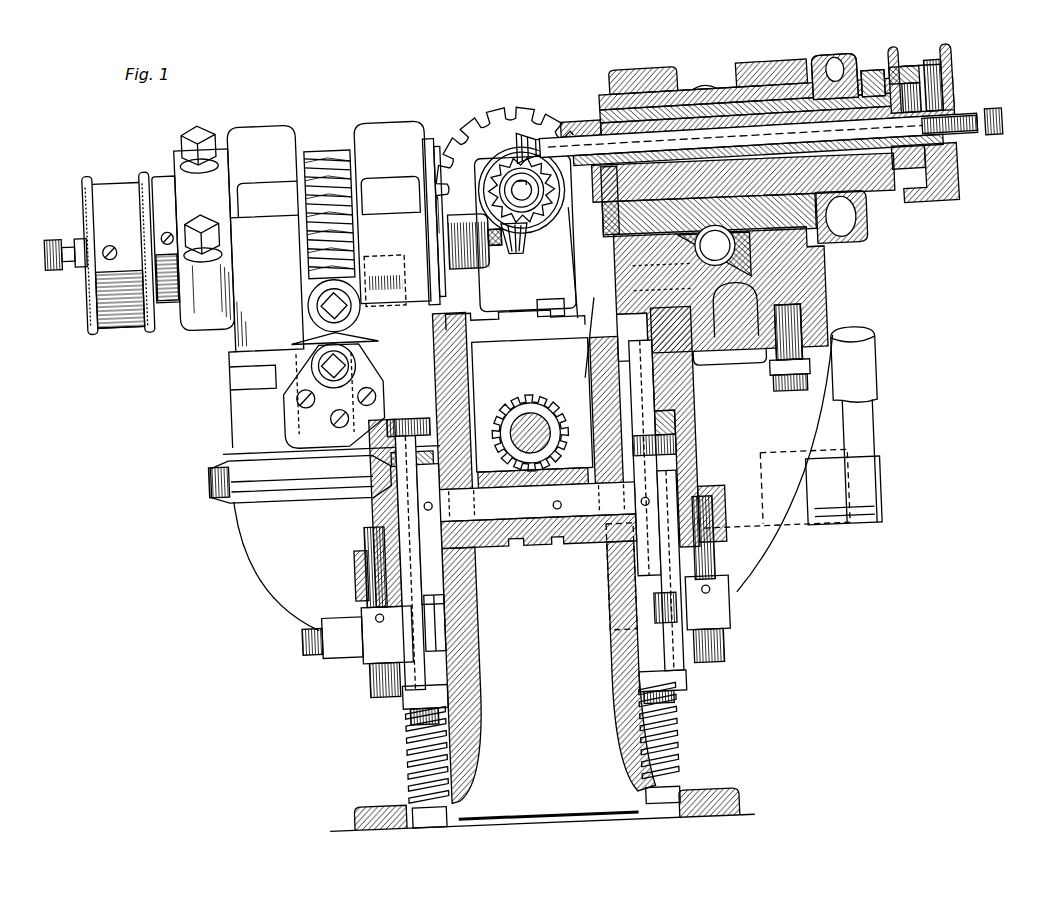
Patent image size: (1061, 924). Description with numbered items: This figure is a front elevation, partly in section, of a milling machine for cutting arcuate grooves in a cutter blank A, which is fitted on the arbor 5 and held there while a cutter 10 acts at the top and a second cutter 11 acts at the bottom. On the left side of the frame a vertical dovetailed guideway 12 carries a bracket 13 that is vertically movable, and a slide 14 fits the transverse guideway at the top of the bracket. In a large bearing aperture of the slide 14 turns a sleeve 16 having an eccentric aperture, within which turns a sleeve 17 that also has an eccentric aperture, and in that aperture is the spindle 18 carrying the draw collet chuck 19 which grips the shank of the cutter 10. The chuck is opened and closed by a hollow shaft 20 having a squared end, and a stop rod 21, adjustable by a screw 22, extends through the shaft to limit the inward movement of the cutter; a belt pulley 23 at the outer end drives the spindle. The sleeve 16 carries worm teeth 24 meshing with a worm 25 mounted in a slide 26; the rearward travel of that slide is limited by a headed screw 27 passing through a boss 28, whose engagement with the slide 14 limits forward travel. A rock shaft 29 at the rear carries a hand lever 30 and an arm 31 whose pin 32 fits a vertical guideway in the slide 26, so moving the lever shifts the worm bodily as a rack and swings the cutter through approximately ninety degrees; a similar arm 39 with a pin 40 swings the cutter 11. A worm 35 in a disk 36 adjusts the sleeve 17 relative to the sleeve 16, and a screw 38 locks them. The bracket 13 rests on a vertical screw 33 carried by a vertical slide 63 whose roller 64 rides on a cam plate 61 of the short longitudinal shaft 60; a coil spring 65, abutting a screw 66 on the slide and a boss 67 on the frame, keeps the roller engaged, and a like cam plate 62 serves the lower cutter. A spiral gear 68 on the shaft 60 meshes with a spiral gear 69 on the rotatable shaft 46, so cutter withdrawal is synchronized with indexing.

The cutter blank A is at (512, 175).
The arbor 5 is at (575, 206).
The cutter 10 is at (531, 142).
The cutter 11 is at (529, 243).
The vertical dovetailed guideway 12 is at (644, 458).
The bracket 13 is at (696, 432).
The slide 14 is at (838, 302).
The sleeve 16 is at (806, 72).
The sleeve 17 is at (671, 99).
The spindle 18 is at (603, 99).
The draw collet chuck 19 is at (578, 122).
The hollow shaft 20 is at (968, 143).
The stop rod 21 is at (860, 150).
The screw 22 is at (1005, 134).
The belt pulley 23 is at (923, 85).
The worm teeth 24 is at (725, 97).
The worm 25 is at (600, 285).
The slide 26 is at (808, 264).
The headed screw 27 is at (763, 356).
The boss 28 is at (732, 325).
The rock shaft 29 is at (876, 509).
The hand lever 30 is at (875, 359).
The arm 31 is at (650, 316).
The pin 32 is at (646, 300).
The vertical screw 33 is at (710, 565).
The worm 35 is at (920, 226).
The disk 36 is at (874, 233).
The screw 38 is at (861, 74).
The arm 39 is at (392, 337).
The pin 40 is at (367, 297).
The rotatable shaft 46 is at (533, 427).
The short longitudinal shaft 60 is at (594, 532).
The cam plate 61 is at (603, 588).
The cam plate 62 is at (432, 557).
The vertical slide 63 is at (705, 493).
The roller 64 is at (643, 434).
The coil spring 65 is at (392, 734).
The screw 66 is at (407, 684).
The boss 67 is at (392, 706).
The spiral gear 68 is at (535, 545).
The spiral gear 69 is at (546, 418).